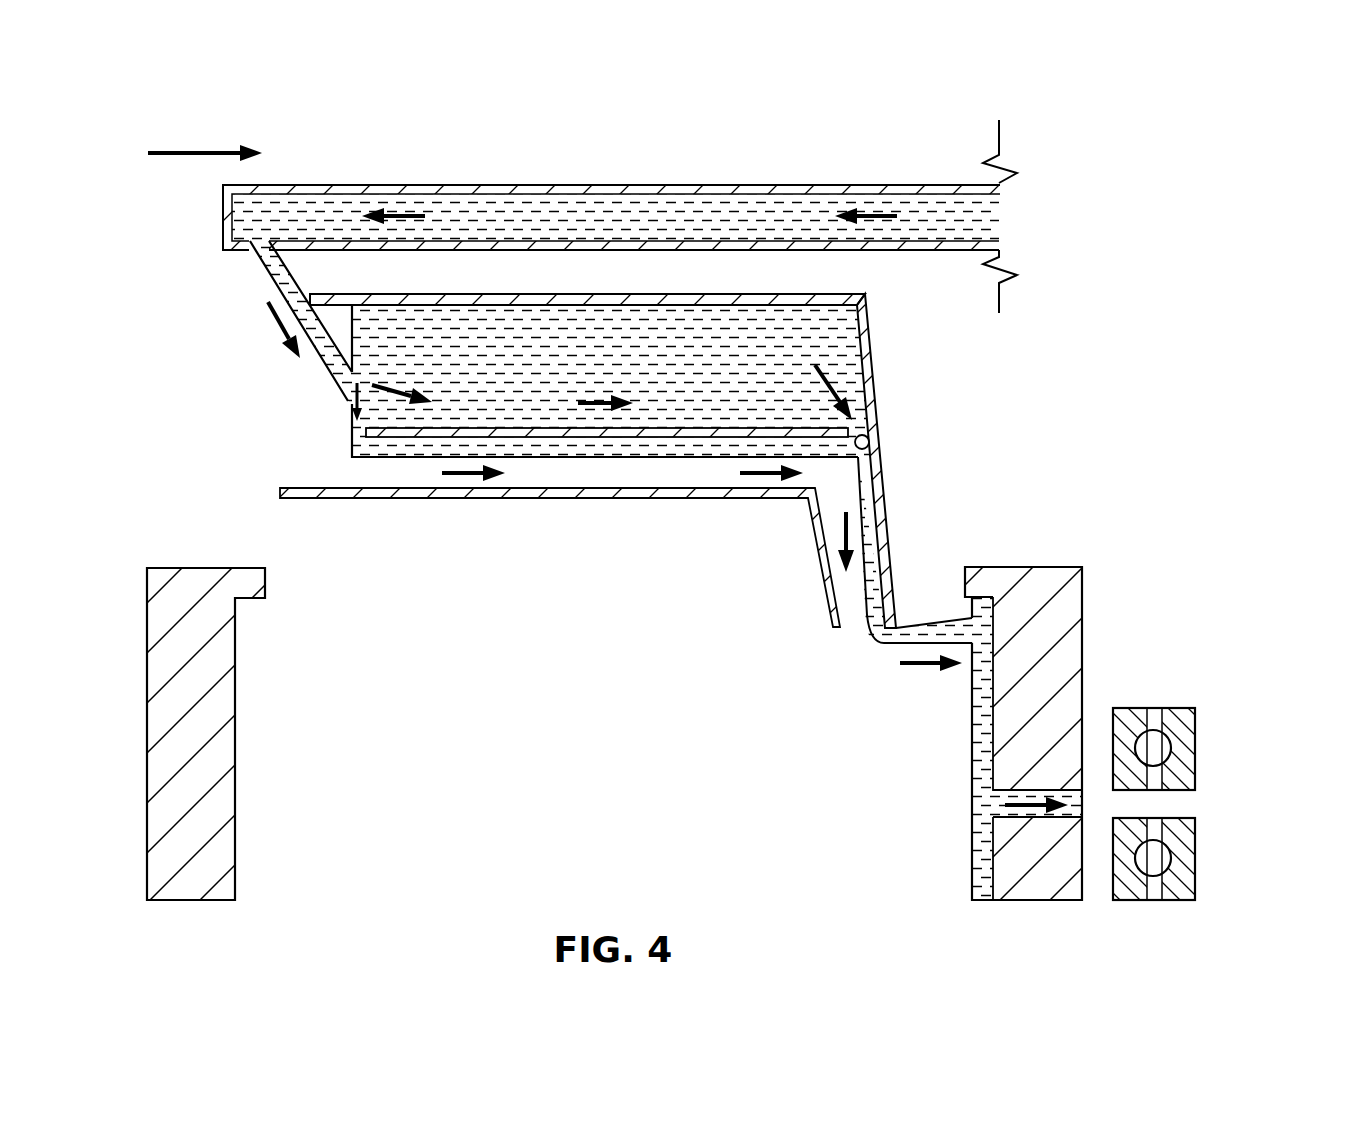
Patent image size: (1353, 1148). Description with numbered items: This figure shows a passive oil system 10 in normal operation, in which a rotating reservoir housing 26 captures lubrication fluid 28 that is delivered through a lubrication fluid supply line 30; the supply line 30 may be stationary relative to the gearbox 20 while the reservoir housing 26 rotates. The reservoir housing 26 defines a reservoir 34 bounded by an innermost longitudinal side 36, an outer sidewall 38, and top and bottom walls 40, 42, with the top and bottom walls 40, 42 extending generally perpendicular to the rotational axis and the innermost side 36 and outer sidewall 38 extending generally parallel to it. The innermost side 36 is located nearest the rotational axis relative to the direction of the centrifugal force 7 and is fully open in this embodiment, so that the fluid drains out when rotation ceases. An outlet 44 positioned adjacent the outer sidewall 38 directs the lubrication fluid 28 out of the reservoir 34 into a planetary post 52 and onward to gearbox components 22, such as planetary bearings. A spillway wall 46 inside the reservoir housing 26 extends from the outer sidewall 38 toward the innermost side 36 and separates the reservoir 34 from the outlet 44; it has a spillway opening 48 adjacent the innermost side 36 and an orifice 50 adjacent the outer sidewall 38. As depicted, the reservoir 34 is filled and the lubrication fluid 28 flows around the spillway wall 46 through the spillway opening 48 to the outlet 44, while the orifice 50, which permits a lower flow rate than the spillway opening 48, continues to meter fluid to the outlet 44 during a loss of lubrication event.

The centrifugal force 7 is at (194, 151).
The passive oil system 10 is at (956, 175).
The gearbox 20 is at (915, 103).
The gearbox component 22 is at (1186, 738).
The reservoir housing 26 is at (628, 442).
The lubrication fluid 28 is at (335, 385).
The lubrication fluid supply line 30 is at (716, 184).
The reservoir 34 is at (620, 372).
The innermost longitudinal side 36 is at (265, 430).
The outer sidewall 38 is at (876, 391).
The top wall 40 is at (600, 296).
The bottom wall 42 is at (348, 500).
The outlet 44 is at (856, 606).
The spillway wall 46 is at (584, 438).
The spillway opening 48 is at (352, 431).
The orifice 50 is at (870, 446).
The planetary post 52 is at (1073, 673).